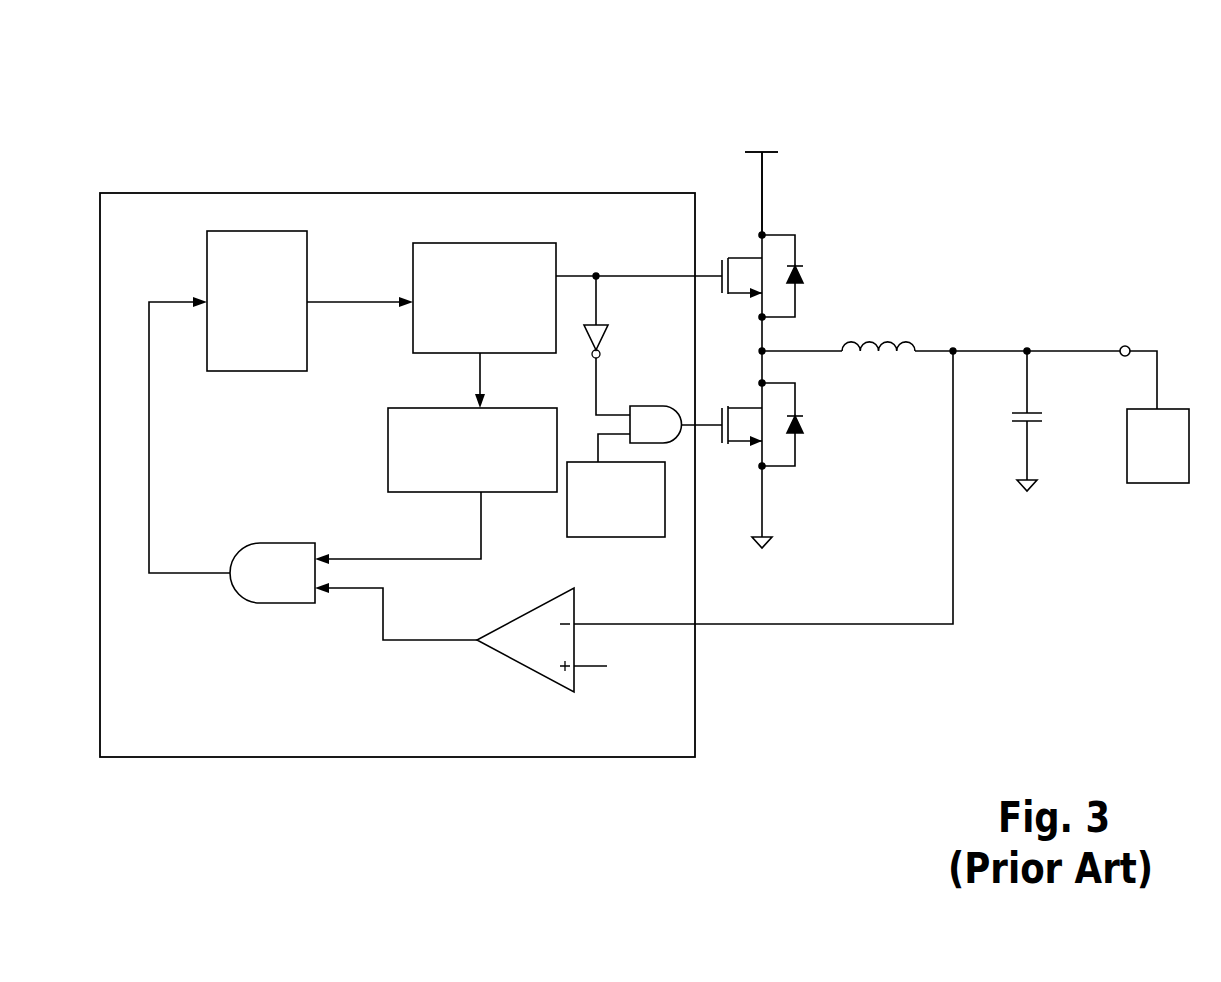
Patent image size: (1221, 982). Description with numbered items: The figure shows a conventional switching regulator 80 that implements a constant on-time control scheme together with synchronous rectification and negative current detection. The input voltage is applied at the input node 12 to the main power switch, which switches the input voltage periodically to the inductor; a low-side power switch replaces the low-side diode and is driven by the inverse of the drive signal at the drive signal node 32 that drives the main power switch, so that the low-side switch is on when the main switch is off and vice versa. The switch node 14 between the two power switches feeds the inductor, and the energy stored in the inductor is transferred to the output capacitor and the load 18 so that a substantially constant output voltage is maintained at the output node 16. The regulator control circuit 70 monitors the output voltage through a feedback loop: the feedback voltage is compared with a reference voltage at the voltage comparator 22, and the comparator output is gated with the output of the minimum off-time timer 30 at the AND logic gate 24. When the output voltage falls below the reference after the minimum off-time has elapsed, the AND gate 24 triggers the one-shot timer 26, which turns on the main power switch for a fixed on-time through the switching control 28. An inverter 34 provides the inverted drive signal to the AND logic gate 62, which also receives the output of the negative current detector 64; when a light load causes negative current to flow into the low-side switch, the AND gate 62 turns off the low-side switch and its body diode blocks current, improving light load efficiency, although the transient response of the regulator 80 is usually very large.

The input voltage node 12 is at (768, 153).
The switch node VSW 14 is at (764, 354).
The output voltage node 16 is at (950, 355).
The load 18 is at (1158, 484).
The voltage comparator 22 is at (508, 660).
The AND logic gate 24 is at (298, 605).
The one-shot timer 26 is at (257, 301).
The switching control 28 is at (484, 298).
The minimum off-time timer 30 is at (472, 450).
The drive signal node 32 is at (634, 276).
The inverter 34 is at (598, 356).
The AND logic gate 62 is at (655, 406).
The negative current detector 64 is at (605, 538).
The controller 70 is at (604, 193).
The switching regulator 80 is at (940, 110).